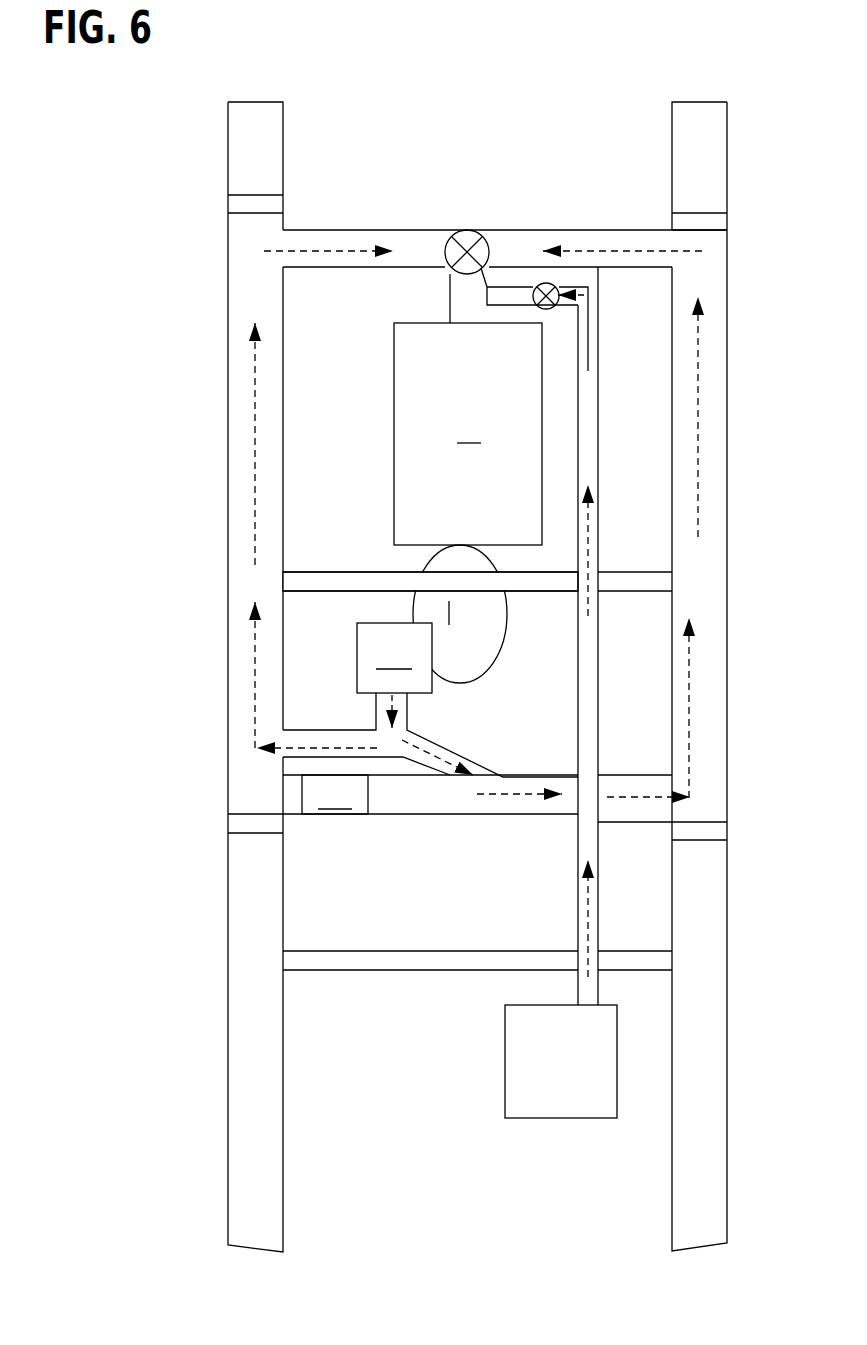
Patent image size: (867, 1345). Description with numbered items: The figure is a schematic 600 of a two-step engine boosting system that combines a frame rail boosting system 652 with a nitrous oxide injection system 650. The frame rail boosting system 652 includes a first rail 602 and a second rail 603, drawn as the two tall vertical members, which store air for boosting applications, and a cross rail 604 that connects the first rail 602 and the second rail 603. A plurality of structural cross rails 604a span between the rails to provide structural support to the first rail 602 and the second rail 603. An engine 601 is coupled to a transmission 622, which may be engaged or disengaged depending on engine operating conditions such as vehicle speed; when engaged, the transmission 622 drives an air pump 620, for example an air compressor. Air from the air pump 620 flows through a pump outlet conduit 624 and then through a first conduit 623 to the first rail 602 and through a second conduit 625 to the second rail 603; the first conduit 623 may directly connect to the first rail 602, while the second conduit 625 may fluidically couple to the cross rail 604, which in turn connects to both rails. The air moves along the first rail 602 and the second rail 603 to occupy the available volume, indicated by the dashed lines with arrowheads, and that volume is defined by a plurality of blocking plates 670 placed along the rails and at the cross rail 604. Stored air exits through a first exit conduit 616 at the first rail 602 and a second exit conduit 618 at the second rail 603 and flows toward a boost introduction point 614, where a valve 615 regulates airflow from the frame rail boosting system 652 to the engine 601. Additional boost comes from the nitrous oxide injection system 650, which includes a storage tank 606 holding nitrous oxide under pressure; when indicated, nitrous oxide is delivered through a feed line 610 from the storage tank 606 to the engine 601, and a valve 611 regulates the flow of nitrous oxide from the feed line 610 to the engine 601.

The schematic 600 is at (151, 110).
The blocking plates 670 is at (242, 208).
The boost introduction point 614 is at (456, 230).
The first exit conduit 616 is at (337, 230).
The second exit conduit 618 is at (598, 230).
The valve 615 is at (468, 232).
The valve 611 is at (557, 289).
The engine 601 is at (468, 434).
The first rail 602 is at (218, 372).
The second rail 603 is at (728, 403).
The structural cross rails 604a is at (293, 572).
The transmission 622 is at (430, 614).
The air pump 620 is at (394, 658).
The frame rail boosting system 652 is at (206, 632).
The first conduit 623 is at (358, 728).
The pump outlet conduit 624 is at (410, 717).
The second conduit 625 is at (458, 755).
The cross rail 604 is at (402, 795).
The feed line 610 is at (600, 860).
The storage tank 606 is at (561, 1061).
The nitrous oxide injection system 650 is at (494, 1135).